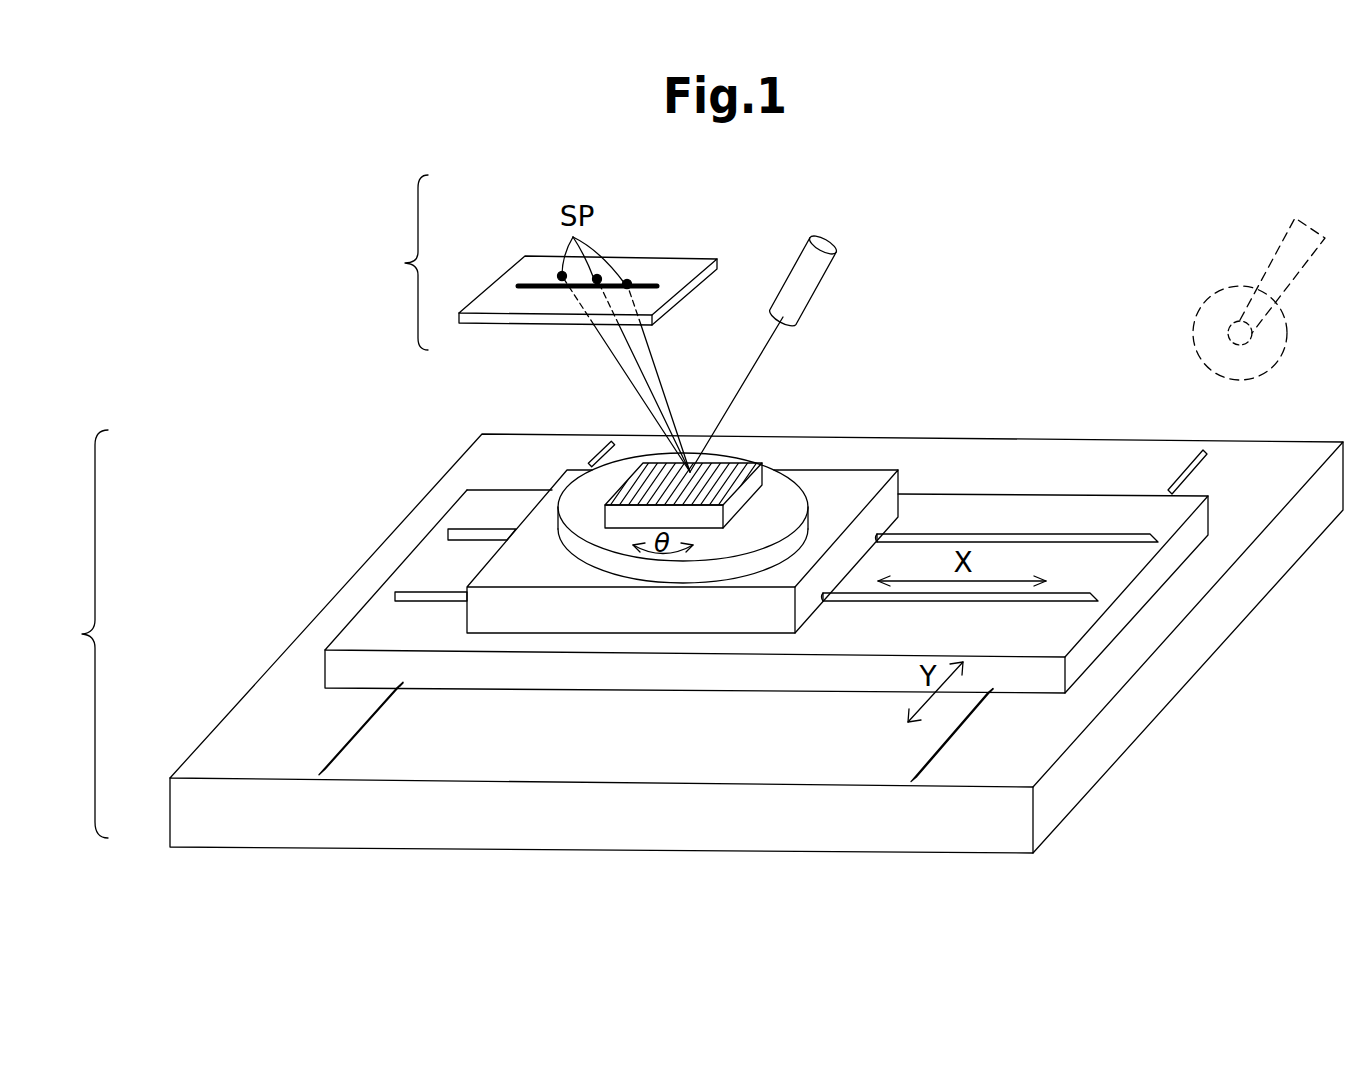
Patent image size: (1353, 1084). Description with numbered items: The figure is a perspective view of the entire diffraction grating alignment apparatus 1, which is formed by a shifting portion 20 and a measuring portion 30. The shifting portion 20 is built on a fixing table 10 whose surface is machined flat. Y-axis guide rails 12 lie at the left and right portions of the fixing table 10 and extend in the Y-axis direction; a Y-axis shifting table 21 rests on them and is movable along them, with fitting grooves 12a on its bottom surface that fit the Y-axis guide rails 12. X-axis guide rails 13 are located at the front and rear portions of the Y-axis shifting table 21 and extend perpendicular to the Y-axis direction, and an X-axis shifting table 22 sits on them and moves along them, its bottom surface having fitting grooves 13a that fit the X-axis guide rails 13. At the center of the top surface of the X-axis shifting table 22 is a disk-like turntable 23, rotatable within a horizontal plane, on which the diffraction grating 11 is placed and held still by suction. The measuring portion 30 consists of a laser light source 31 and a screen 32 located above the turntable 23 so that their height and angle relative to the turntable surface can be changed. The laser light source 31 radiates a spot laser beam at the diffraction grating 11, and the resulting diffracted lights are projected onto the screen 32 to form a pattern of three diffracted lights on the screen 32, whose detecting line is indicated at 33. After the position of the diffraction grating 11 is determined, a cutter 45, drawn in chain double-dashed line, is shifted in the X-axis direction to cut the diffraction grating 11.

The diffraction grating alignment apparatus 1 is at (1097, 231).
The fixing table 10 is at (307, 838).
The diffraction grating 11 is at (738, 500).
The Y-axis guide rails 12 is at (340, 762).
The fitting grooves 12a is at (403, 690).
The X-axis guide rails 13 is at (1058, 541).
The fitting grooves 13a is at (880, 540).
The shifting portion 20 is at (72, 650).
The Y-axis shifting table 21 is at (555, 682).
The X-axis shifting table 22 is at (905, 485).
The turntable 23 is at (582, 548).
The measuring portion 30 is at (392, 280).
The laser light source 31 is at (835, 245).
The screen 32 is at (678, 265).
The line sensor 33 is at (530, 280).
The cutter 45 is at (1267, 360).